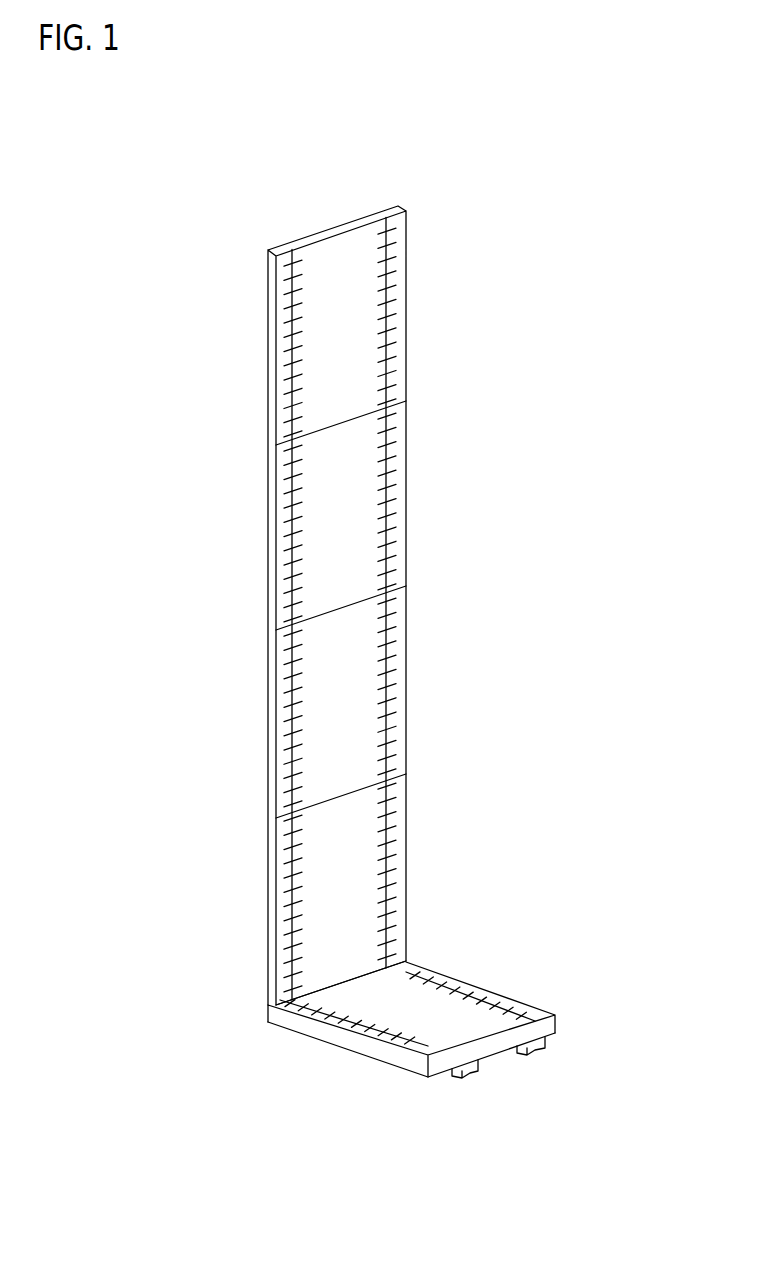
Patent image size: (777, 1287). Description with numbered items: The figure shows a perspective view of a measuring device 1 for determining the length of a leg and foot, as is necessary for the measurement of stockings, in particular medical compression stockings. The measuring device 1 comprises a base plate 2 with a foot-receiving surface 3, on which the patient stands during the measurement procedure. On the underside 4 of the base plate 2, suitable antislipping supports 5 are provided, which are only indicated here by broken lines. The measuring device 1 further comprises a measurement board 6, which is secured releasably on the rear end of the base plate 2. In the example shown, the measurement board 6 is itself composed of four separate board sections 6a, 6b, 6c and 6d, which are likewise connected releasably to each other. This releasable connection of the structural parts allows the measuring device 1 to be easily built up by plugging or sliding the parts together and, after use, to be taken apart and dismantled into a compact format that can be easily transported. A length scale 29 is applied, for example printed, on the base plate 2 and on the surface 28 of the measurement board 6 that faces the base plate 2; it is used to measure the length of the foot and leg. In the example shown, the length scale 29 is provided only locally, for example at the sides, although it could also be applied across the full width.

The measuring device 1 is at (268, 167).
The base plate 2 is at (497, 992).
The foot-receiving surface 3 is at (342, 1028).
The underside of the base plate 4 is at (438, 1087).
The antislipping supports 5 is at (465, 1073).
The measurement board 6 is at (420, 472).
The board section 6a is at (406, 876).
The board section 6b is at (406, 676).
The board section 6c is at (406, 523).
The board section 6d is at (406, 303).
The surface of the measurement board 28 is at (318, 706).
The length scale 29 is at (290, 491).